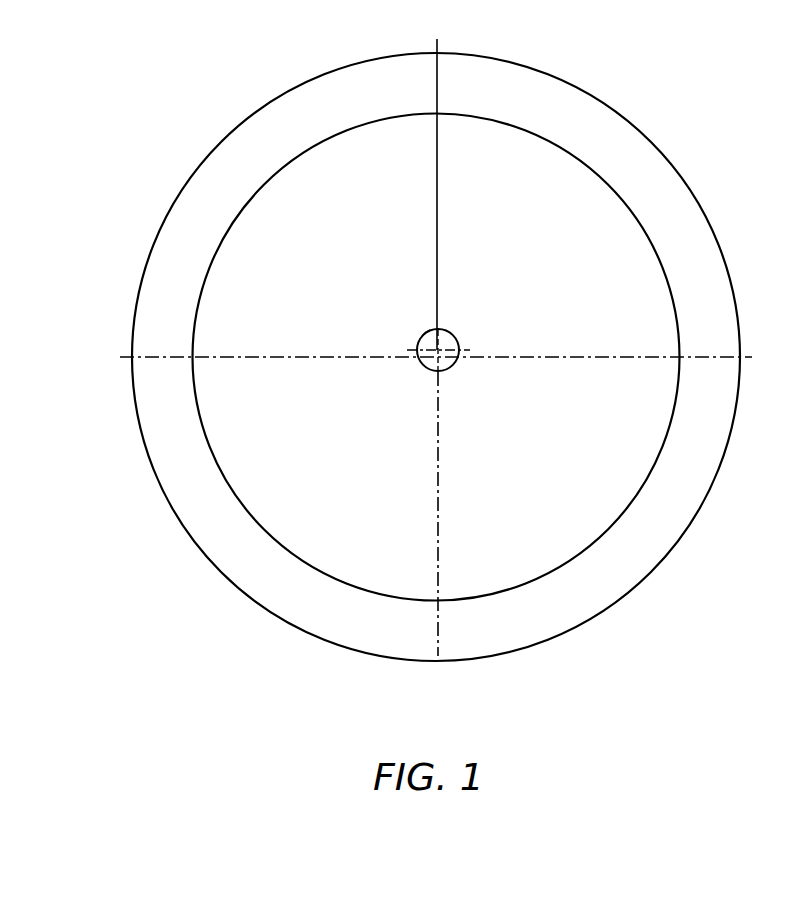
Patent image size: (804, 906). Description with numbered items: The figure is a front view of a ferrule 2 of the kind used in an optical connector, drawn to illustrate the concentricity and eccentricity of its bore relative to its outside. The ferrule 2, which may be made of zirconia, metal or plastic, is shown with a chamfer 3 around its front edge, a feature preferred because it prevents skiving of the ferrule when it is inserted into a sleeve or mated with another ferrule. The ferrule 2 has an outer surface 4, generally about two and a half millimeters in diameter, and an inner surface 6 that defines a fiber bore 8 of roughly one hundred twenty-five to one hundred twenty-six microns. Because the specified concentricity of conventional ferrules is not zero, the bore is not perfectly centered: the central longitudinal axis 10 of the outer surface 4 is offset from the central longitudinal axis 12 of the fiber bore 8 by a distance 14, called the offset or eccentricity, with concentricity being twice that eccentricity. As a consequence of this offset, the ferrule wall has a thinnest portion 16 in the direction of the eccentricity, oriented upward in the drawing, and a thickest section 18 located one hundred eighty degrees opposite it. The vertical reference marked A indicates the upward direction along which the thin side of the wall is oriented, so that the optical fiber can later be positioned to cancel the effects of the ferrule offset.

The ferrule 2 is at (456, 350).
The chamfer 3 is at (633, 566).
The outer surface 4 is at (727, 266).
The inner surface 6 is at (424, 340).
The fiber bore 8 is at (452, 334).
The central longitudinal axis of the outer surface 10 is at (612, 355).
The central longitudinal axis of the fiber bore 12 is at (462, 347).
The distance 14 is at (391, 338).
The thinnest portion of the ferrule wall 16 is at (471, 227).
The thickest section of the ferrule wall 18 is at (481, 478).
The vertical axis A is at (437, 156).